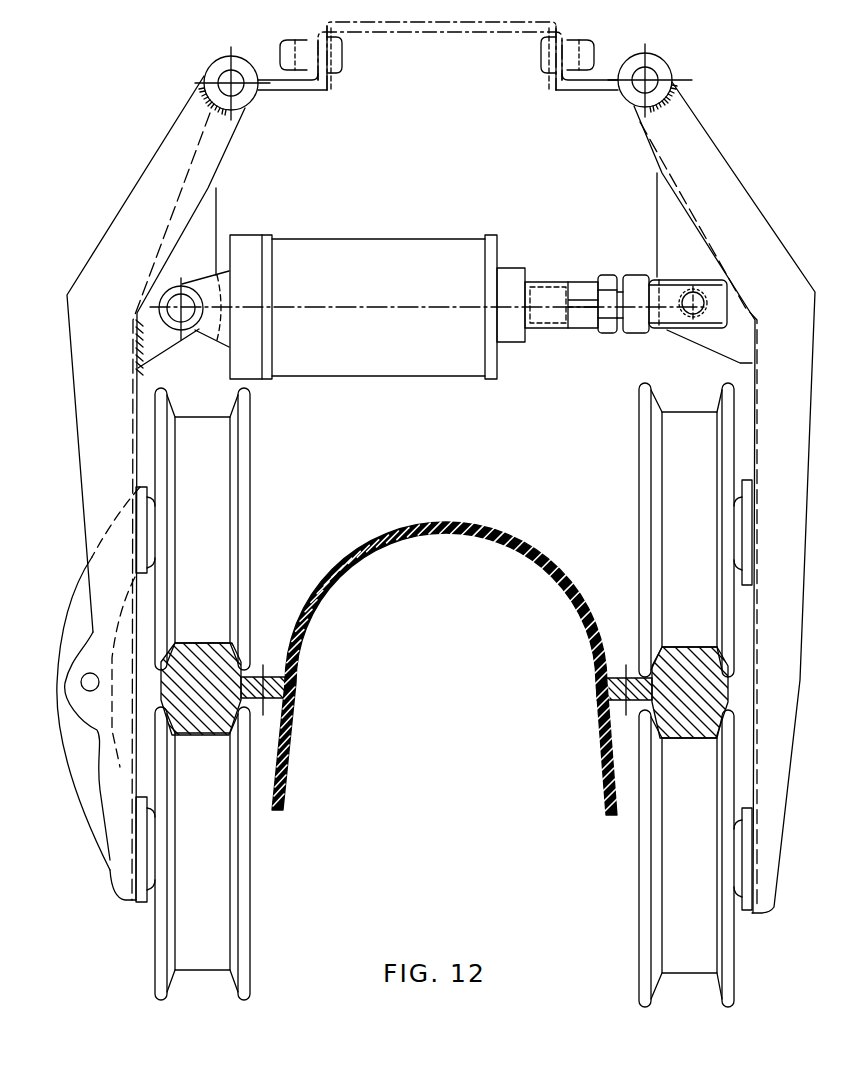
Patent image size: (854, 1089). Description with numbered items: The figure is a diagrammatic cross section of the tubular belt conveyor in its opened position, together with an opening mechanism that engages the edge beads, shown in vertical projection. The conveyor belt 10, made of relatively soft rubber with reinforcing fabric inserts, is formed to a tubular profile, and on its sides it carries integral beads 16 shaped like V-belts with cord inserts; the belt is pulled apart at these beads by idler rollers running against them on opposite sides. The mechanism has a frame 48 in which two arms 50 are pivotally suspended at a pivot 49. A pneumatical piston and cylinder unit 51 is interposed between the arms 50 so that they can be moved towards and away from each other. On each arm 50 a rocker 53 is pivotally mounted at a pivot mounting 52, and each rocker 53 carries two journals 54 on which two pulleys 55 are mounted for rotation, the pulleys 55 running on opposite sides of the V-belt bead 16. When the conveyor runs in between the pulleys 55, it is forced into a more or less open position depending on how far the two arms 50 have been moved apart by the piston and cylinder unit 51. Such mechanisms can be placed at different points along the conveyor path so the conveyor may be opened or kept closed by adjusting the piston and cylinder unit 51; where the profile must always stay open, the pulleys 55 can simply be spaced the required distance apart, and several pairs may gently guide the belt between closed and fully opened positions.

The conveyor belt 10 is at (325, 594).
The bead 16 is at (205, 723).
The frame 48 is at (564, 91).
The pivot 49 is at (222, 82).
The arm 50 is at (167, 153).
The pneumatical piston and cylinder unit 51 is at (444, 247).
The pivot mounting 52 is at (84, 690).
The rocker 53 is at (95, 807).
The journal 54 is at (150, 505).
The pulley 55 is at (245, 453).